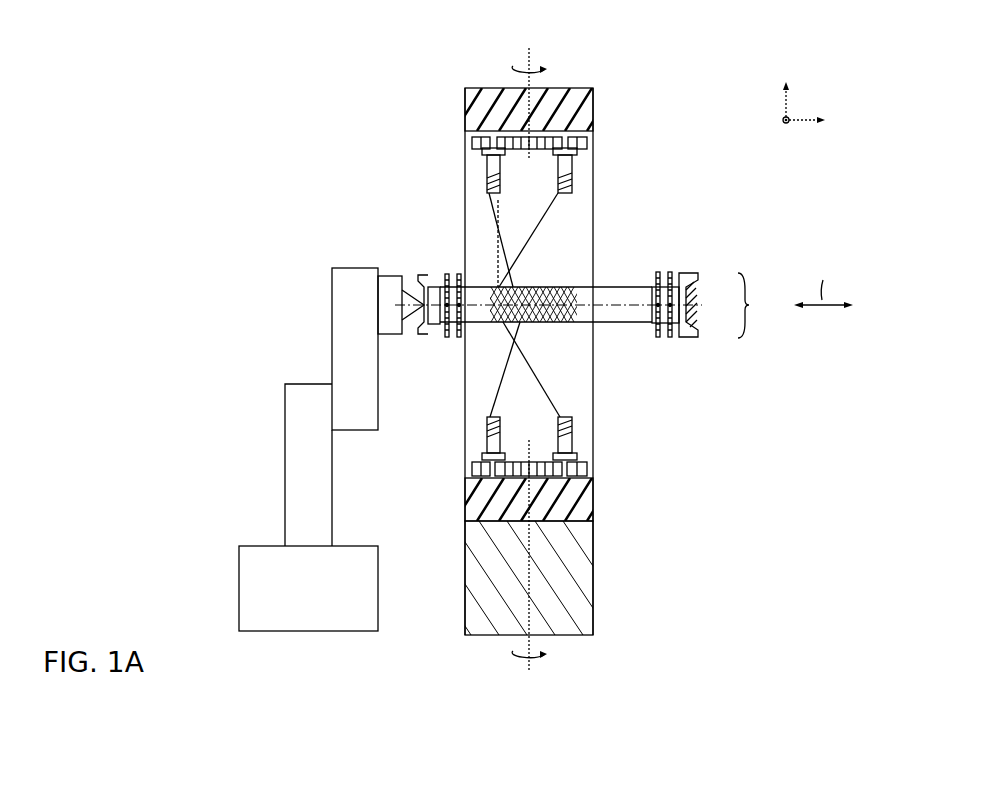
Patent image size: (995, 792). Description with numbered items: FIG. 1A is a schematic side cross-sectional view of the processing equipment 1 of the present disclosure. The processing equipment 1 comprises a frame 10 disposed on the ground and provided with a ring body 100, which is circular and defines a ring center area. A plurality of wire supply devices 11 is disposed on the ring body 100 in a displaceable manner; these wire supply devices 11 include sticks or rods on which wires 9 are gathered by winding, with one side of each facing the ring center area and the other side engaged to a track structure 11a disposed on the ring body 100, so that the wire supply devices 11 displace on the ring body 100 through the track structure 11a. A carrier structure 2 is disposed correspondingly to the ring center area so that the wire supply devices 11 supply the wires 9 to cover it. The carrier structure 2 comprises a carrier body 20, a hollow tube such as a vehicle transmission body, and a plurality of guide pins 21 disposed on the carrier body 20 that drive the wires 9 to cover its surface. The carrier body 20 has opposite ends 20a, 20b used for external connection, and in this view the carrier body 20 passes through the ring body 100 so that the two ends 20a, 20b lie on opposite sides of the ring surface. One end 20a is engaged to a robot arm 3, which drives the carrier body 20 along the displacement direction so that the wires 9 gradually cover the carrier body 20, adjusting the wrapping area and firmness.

The processing equipment 1 is at (404, 57).
The carrier structure 2 is at (608, 313).
The robot arm 3 is at (330, 299).
The wires 9 is at (487, 188).
The frame 10 is at (596, 607).
The wire supply devices 11 is at (574, 167).
The track structure 11a is at (588, 143).
The carrier body 20 is at (637, 320).
The end of the carrier body 20a is at (437, 348).
The end of the carrier body 20b is at (714, 261).
The guide pins 21 is at (669, 340).
The ring body 100 is at (594, 102).